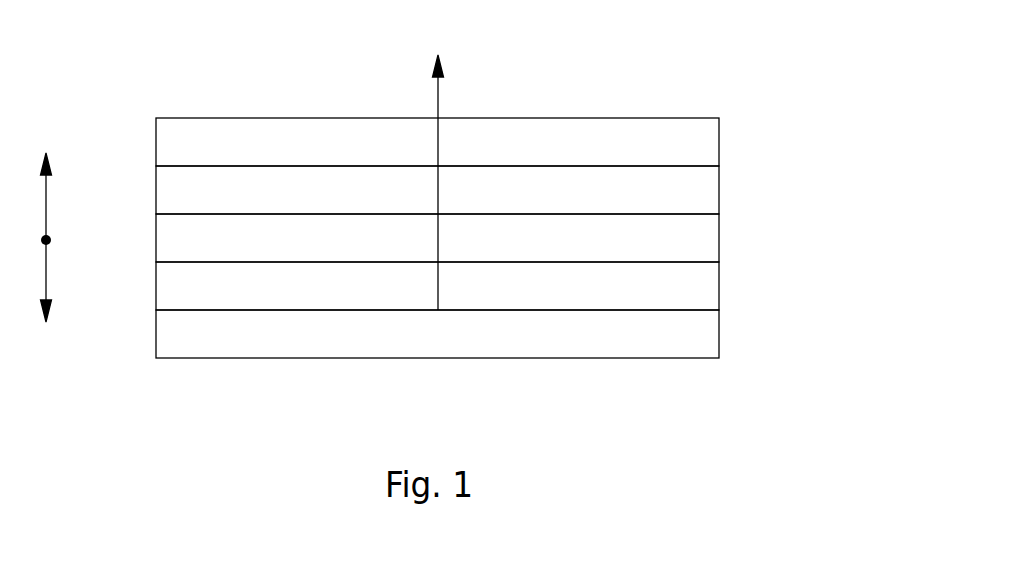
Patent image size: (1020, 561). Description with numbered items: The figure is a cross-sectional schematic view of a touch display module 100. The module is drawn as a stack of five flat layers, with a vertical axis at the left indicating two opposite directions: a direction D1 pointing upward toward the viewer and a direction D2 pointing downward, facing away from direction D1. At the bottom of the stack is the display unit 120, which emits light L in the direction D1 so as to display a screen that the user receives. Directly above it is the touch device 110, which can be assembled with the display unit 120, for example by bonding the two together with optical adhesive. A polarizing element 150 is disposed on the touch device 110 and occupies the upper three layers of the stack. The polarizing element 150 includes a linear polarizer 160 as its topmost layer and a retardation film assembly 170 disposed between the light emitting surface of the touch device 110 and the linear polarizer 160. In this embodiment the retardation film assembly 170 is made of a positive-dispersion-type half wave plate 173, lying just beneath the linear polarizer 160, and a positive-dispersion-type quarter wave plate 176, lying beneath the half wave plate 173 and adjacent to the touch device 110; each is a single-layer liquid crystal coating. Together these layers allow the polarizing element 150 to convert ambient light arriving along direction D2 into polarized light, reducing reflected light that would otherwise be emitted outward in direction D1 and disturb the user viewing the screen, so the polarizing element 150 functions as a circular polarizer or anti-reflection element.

The touch display module 100 is at (158, 70).
The touch device 110 is at (705, 289).
The display unit 120 is at (705, 337).
The polarizing element 150 is at (847, 125).
The linear polarizer 160 is at (705, 143).
The retardation film assembly 170 is at (780, 170).
The positive-dispersion-type half wave plate 173 is at (705, 191).
The positive-dispersion-type quarter wave plate 176 is at (705, 240).
The light L is at (438, 95).
The direction D1 is at (45, 212).
The direction D2 is at (45, 329).